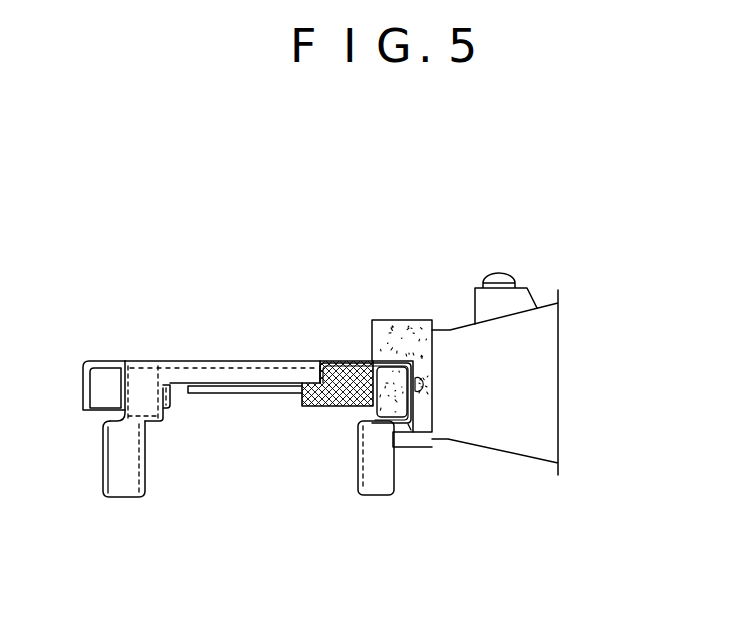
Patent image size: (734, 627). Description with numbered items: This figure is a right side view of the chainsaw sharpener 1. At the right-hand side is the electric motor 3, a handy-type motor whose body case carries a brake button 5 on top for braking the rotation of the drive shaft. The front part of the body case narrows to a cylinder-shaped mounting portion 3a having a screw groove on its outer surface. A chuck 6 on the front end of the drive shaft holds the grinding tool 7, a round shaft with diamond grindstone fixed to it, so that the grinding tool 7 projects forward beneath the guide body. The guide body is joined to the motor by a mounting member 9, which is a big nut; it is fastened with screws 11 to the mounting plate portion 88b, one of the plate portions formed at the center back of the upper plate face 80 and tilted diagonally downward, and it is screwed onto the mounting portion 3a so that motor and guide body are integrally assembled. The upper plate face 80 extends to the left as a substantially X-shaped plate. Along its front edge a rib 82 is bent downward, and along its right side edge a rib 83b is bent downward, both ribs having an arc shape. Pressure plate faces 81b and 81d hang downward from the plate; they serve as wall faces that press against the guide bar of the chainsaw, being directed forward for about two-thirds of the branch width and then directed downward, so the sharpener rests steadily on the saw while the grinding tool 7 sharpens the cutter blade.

The chainsaw sharpener 1 is at (604, 212).
The electric motor 3 is at (537, 417).
The mounting portion 3a is at (418, 500).
The brake button 5 is at (500, 272).
The chuck 6 is at (322, 360).
The grinding tool 7 is at (232, 372).
The mounting member 9 is at (385, 320).
The screws 11 is at (415, 430).
The upper plate face 80 is at (138, 361).
The pressure plate face 81b is at (128, 467).
The pressure plate face 81d is at (373, 467).
The rib 82 is at (100, 393).
The rib 83b is at (248, 377).
The mounting plate portion 88b is at (430, 447).